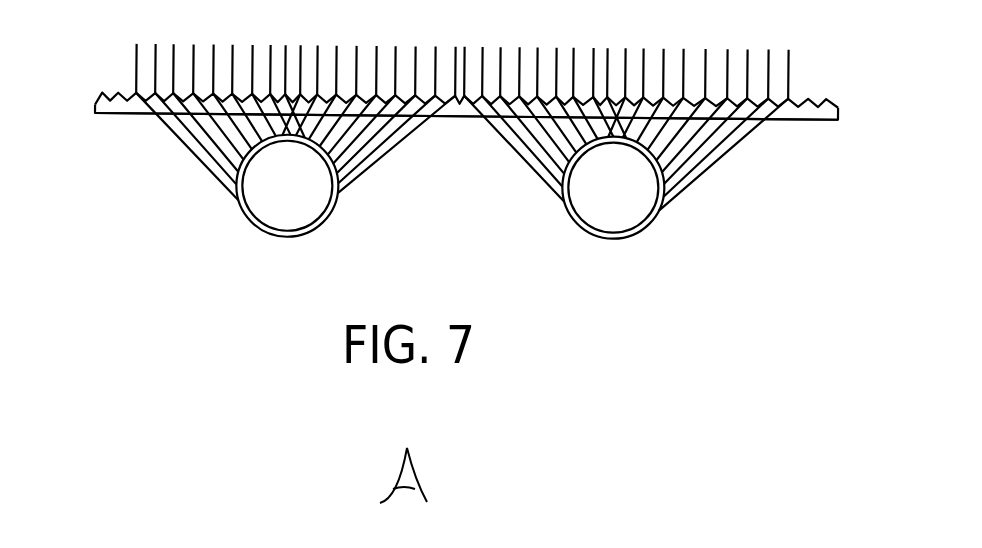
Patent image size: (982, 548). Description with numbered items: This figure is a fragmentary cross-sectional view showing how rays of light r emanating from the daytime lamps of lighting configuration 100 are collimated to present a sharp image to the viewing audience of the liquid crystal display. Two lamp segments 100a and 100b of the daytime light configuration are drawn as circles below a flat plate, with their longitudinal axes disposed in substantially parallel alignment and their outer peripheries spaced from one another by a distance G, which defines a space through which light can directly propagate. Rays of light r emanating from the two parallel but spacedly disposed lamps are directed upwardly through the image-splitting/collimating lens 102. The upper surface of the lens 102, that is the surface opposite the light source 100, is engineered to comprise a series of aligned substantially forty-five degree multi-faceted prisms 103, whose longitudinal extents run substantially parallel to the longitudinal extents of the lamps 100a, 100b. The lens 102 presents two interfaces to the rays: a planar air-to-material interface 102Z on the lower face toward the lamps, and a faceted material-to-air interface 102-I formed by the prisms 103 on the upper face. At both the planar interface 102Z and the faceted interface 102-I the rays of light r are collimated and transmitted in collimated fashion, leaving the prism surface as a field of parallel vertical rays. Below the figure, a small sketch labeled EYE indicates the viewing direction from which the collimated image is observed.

The lighting configuration 100 is at (506, 216).
The daytime lamp 100a is at (290, 236).
The daytime lamp 100b is at (606, 238).
The image-splitting/collimating lens 102 is at (467, 103).
The faceted material-to-air interface 102-I is at (183, 97).
The planar air-to-material interface 102Z is at (120, 115).
The multi-faceted prisms 103 is at (112, 99).
The rays of light r is at (192, 158).
The distance G is at (550, 199).
The viewer eye EYE is at (410, 470).